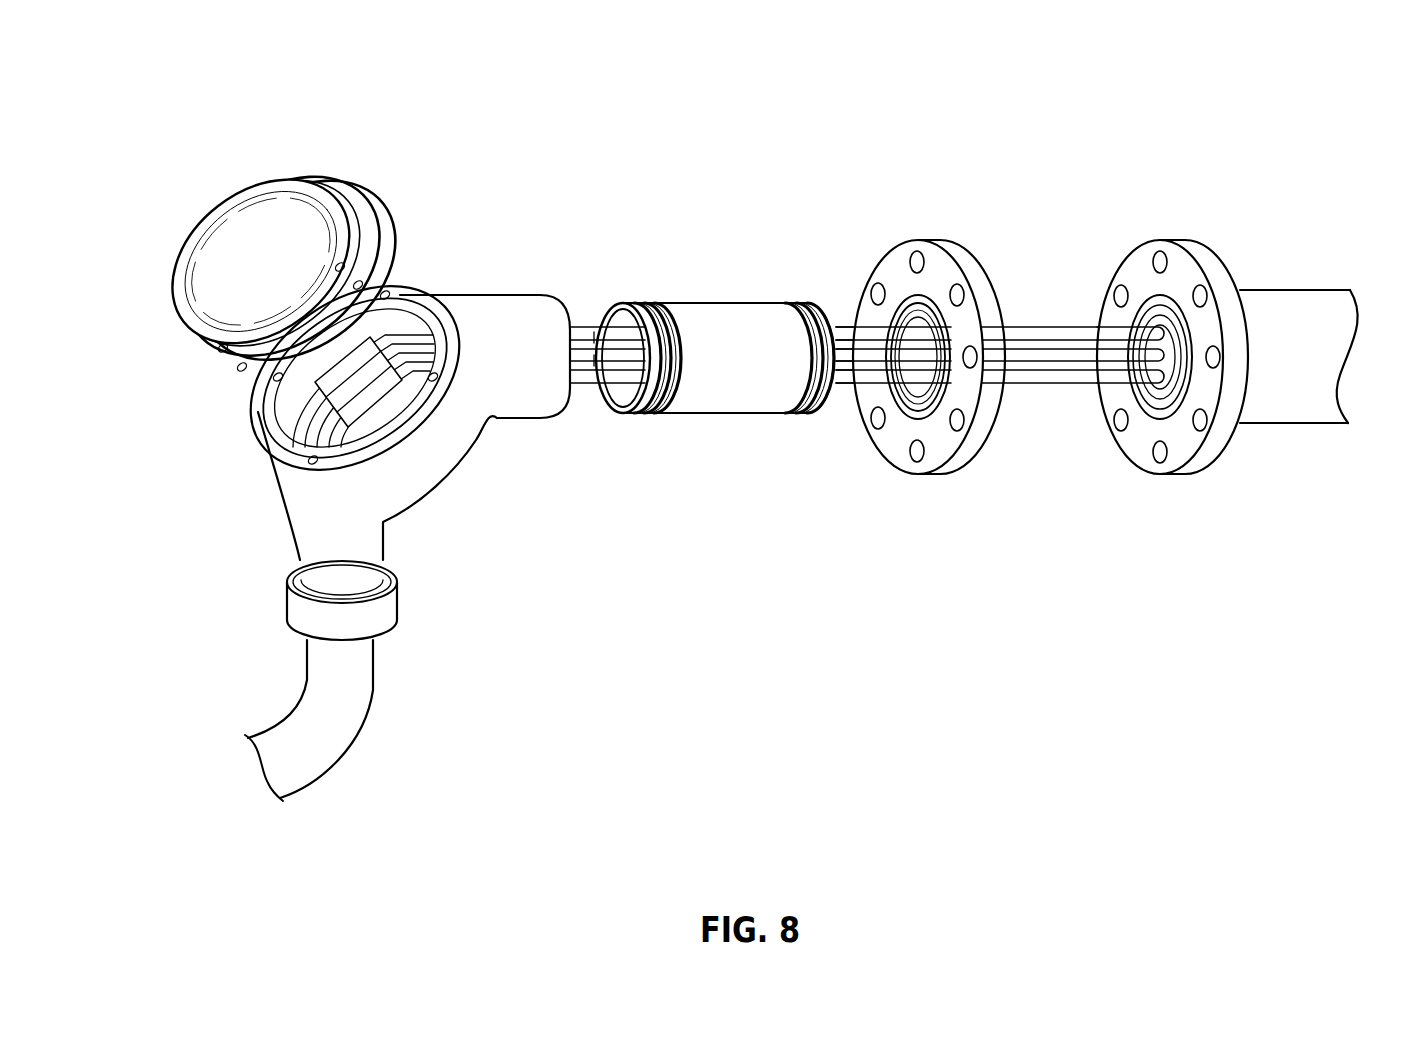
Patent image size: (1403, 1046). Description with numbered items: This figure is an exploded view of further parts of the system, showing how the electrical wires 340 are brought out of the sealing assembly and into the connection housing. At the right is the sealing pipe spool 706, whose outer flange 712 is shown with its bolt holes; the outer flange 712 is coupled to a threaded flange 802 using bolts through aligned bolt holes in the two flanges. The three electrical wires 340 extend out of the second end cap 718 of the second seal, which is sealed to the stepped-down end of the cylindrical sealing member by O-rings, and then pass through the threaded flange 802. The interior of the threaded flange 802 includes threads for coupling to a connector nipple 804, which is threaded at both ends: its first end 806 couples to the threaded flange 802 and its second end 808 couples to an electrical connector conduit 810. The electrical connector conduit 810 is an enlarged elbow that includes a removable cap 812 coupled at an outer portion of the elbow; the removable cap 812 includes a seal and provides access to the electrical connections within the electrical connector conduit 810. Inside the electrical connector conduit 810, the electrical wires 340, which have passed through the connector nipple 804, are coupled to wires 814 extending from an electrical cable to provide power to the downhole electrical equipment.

The removable cap 812 is at (262, 202).
The wires 814 is at (291, 416).
The electrical connector conduit 810 is at (313, 492).
The second end 808 is at (652, 430).
The connector nipple 804 is at (740, 430).
The first end 806 is at (818, 430).
The threaded flange 802 is at (898, 455).
The electrical wires 340 is at (1053, 393).
The second end cap 718 is at (1140, 410).
The outer flange 712 is at (1181, 475).
The sealing pipe spool 706 is at (1293, 403).